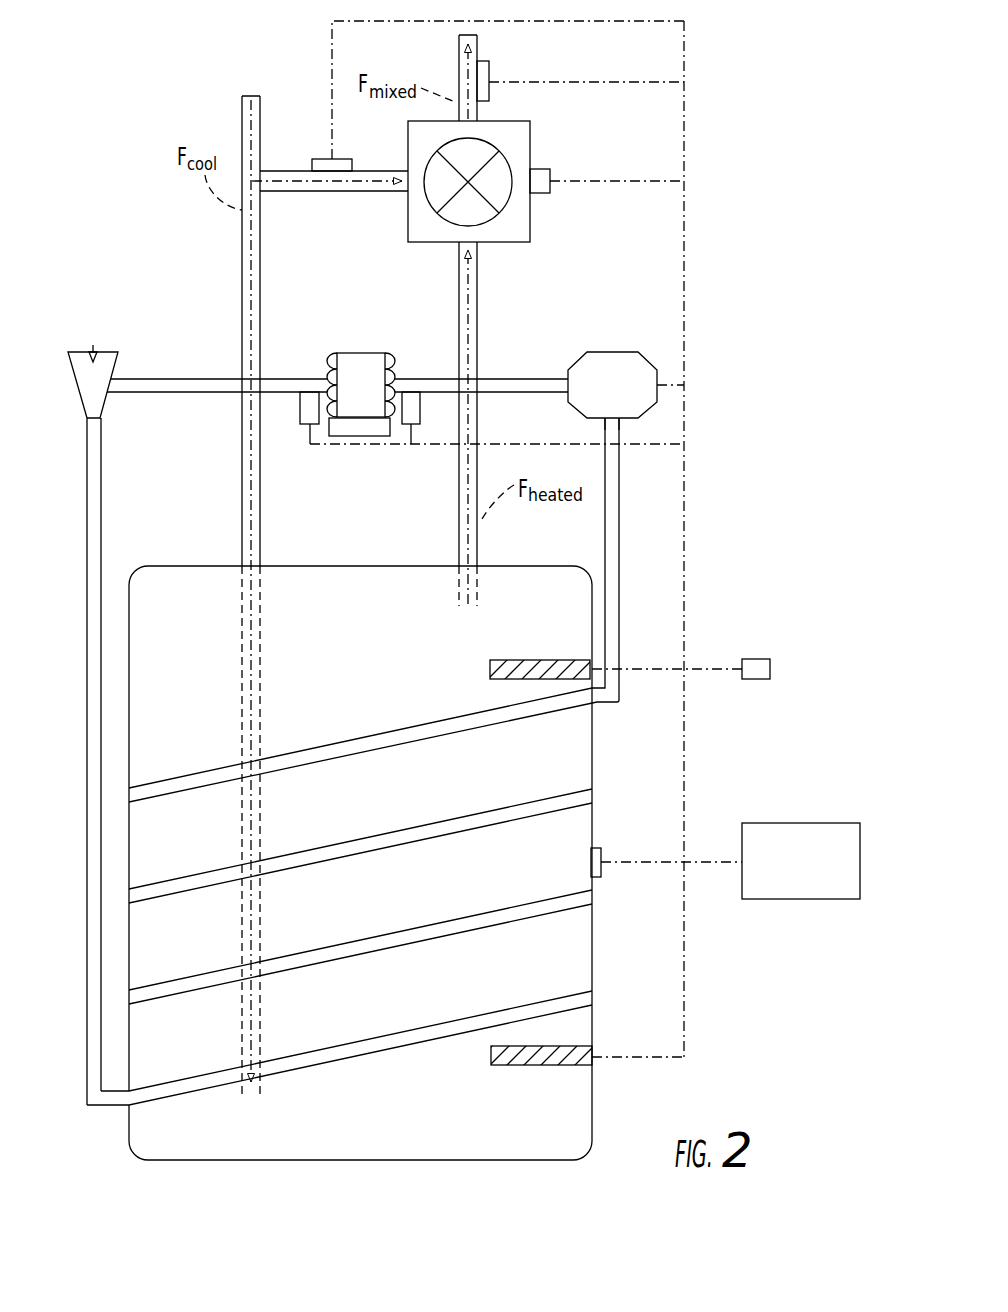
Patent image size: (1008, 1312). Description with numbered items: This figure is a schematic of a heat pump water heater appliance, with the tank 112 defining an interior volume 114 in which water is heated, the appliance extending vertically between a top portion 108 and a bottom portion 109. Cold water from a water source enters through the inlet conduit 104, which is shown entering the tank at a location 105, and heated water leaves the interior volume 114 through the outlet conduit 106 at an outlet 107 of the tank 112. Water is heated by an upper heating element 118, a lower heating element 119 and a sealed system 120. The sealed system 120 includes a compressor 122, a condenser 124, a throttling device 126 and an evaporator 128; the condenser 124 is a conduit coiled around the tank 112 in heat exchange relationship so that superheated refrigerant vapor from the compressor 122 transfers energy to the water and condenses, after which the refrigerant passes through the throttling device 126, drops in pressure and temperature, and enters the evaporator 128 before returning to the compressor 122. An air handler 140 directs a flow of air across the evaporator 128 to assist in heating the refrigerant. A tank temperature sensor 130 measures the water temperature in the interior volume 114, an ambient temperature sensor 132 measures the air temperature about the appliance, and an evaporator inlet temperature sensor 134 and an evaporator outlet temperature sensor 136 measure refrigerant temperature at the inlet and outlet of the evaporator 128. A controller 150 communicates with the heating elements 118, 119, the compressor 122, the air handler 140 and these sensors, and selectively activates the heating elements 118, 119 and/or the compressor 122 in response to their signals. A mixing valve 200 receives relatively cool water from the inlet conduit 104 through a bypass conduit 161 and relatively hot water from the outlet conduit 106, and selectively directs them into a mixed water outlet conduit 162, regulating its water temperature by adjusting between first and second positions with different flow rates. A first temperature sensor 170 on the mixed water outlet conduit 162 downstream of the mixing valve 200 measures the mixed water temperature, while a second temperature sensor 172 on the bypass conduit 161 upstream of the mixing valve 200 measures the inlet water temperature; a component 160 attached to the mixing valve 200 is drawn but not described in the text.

The inlet conduit 104 is at (242, 322).
The cool fluid inlet 105 is at (264, 564).
The outlet conduit 106 is at (459, 322).
The outlet of tank 107 is at (484, 564).
The top portion 108 is at (126, 564).
The bottom portion 109 is at (127, 1162).
The tank 112 is at (592, 772).
The interior volume 114 is at (336, 618).
The upper heating element 118 is at (490, 672).
The lower heating element 119 is at (491, 1055).
The sealed system 120 is at (604, 336).
The compressor 122 is at (583, 352).
The condenser 124 is at (368, 752).
The throttling device 126 is at (118, 358).
The evaporator 128 is at (353, 352).
The tank temperature sensor 130 is at (601, 852).
The ambient temperature sensor 132 is at (760, 659).
The evaporator inlet temperature sensor 134 is at (300, 415).
The evaporator outlet temperature sensor 136 is at (420, 415).
The air handler 140 is at (347, 437).
The controller 150 is at (815, 890).
The valve actuator 160 is at (551, 177).
The bypass conduit 161 is at (335, 192).
The mixed water outlet conduit 162 is at (459, 50).
The first temperature sensor 170 is at (489, 70).
The second temperature sensor 172 is at (312, 165).
The mixing valve 200 is at (530, 245).